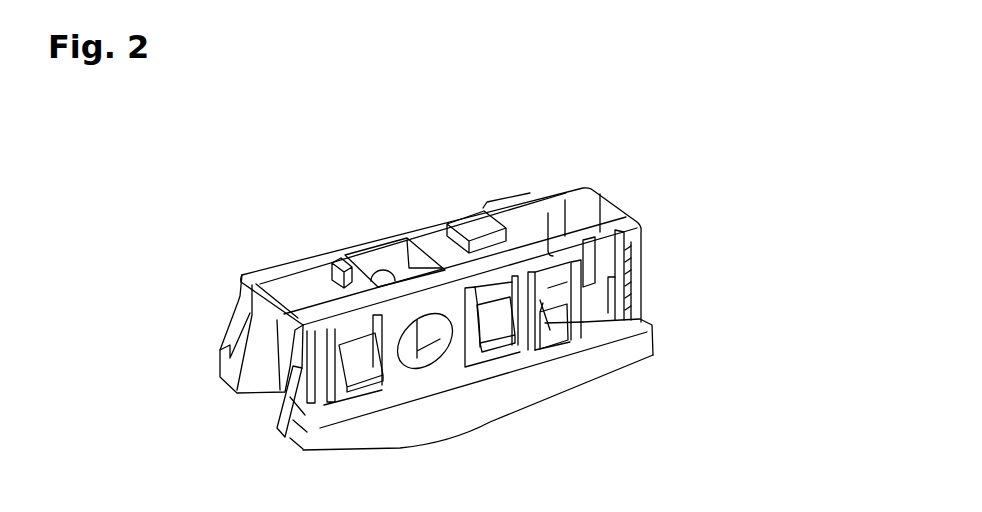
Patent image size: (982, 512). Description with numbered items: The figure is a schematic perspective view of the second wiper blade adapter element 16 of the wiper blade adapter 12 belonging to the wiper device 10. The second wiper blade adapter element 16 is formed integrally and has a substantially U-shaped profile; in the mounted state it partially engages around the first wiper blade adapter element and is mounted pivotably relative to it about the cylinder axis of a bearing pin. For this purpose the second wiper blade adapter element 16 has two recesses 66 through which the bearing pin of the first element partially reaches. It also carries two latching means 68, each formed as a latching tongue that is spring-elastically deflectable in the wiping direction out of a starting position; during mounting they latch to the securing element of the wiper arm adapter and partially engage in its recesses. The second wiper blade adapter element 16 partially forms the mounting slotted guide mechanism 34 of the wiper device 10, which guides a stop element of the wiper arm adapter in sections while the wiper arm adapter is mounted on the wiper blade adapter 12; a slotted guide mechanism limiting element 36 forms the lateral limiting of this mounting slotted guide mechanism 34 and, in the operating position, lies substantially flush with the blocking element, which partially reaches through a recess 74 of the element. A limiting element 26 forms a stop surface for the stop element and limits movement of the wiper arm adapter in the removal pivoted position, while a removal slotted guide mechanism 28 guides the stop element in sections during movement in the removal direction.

The wiper device 10 is at (717, 89).
The wiper blade adapter 12 is at (715, 176).
The second wiper blade adapter element 16 is at (623, 189).
The removal slotted guide mechanism 28 is at (550, 244).
The slotted guide mechanism limiting element 36 is at (578, 244).
The mounting slotted guide mechanism 34 is at (601, 222).
The latching means 68 is at (362, 368).
The recesses 66 is at (438, 372).
The limiting element 26 is at (540, 318).
The recess 74 is at (568, 345).